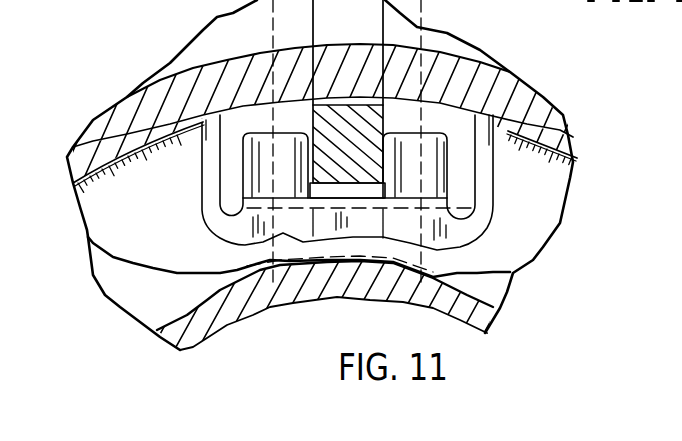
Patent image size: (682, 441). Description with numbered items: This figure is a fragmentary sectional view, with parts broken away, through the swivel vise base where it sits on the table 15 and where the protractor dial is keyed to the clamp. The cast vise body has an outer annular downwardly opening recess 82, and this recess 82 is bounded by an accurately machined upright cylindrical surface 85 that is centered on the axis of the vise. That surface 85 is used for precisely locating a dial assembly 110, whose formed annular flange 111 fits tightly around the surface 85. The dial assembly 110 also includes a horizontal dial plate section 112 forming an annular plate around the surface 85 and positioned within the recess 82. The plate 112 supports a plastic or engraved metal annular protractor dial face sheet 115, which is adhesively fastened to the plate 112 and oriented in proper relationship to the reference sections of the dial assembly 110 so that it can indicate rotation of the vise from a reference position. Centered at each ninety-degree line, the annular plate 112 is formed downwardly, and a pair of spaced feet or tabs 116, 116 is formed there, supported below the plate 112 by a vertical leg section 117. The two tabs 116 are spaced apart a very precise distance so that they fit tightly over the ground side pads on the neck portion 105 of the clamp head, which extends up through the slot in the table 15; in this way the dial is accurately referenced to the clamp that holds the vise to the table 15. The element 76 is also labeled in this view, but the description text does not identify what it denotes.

The table 15 is at (227, 33).
The upper wall 76 is at (502, 88).
The annular recess 82 is at (123, 282).
The cylindrical surface 85 is at (127, 317).
The neck portion 105 is at (347, 115).
The dial assembly 110 is at (510, 132).
The annular flange 111 is at (267, 293).
The dial plate section 112 is at (202, 131).
The protractor dial face sheet 115 is at (527, 235).
The tabs 116 is at (273, 135).
The vertical leg section 117 is at (268, 197).